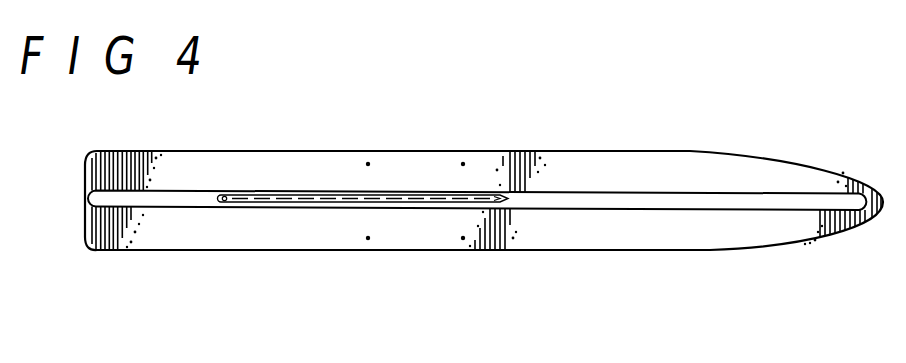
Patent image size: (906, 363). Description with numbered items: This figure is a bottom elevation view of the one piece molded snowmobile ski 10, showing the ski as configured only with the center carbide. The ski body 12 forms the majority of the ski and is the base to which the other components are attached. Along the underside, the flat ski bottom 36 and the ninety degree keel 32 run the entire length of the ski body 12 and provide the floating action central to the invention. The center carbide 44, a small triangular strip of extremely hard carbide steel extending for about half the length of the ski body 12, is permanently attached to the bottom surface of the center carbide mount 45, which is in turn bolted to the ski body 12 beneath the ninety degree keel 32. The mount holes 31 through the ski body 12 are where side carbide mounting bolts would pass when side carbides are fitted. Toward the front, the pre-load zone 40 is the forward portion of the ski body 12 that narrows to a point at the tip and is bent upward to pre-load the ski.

The one piece molded snowmobile ski 10 is at (324, 118).
The ski body 12 is at (413, 139).
The mount holes 31 is at (463, 238).
The ninety degree keel 32 is at (578, 200).
The flat ski bottom 36 is at (637, 180).
The pre-load zone 40 is at (688, 235).
The center carbide 44 is at (288, 203).
The center carbide mount 45 is at (228, 203).